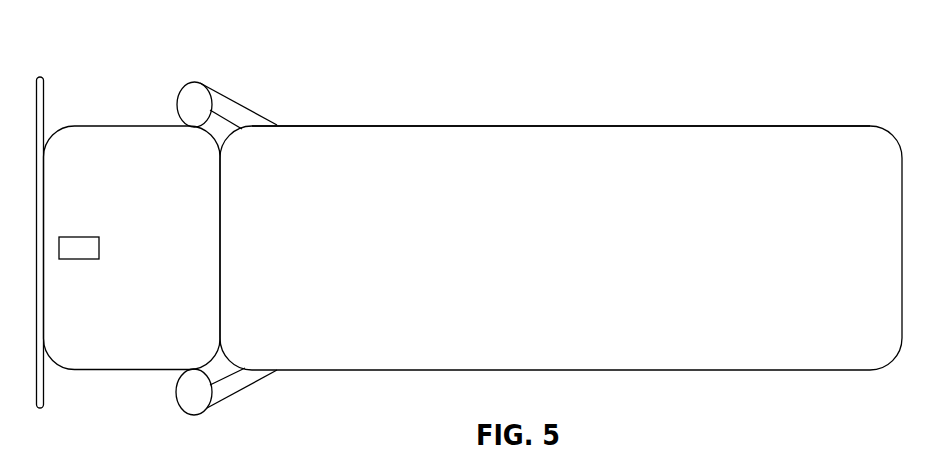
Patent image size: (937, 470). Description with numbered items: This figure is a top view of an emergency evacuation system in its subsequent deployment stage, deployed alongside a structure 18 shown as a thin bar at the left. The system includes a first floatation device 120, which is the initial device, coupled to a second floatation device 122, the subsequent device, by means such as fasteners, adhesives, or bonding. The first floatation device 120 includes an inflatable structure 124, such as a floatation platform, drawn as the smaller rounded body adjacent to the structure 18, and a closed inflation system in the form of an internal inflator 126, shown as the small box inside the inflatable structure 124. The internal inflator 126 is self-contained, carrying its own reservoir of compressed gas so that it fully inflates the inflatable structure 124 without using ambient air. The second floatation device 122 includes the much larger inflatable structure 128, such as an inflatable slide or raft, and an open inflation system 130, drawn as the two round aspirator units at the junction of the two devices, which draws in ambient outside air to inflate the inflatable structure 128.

The wall 18 is at (42, 70).
The first floatation device 120 is at (147, 126).
The second floatation device 122 is at (443, 126).
The inflatable structure 124 is at (117, 125).
The internal inflator 126 is at (78, 260).
The inflatable structure 128 is at (348, 127).
The open inflation system 130 is at (197, 83).